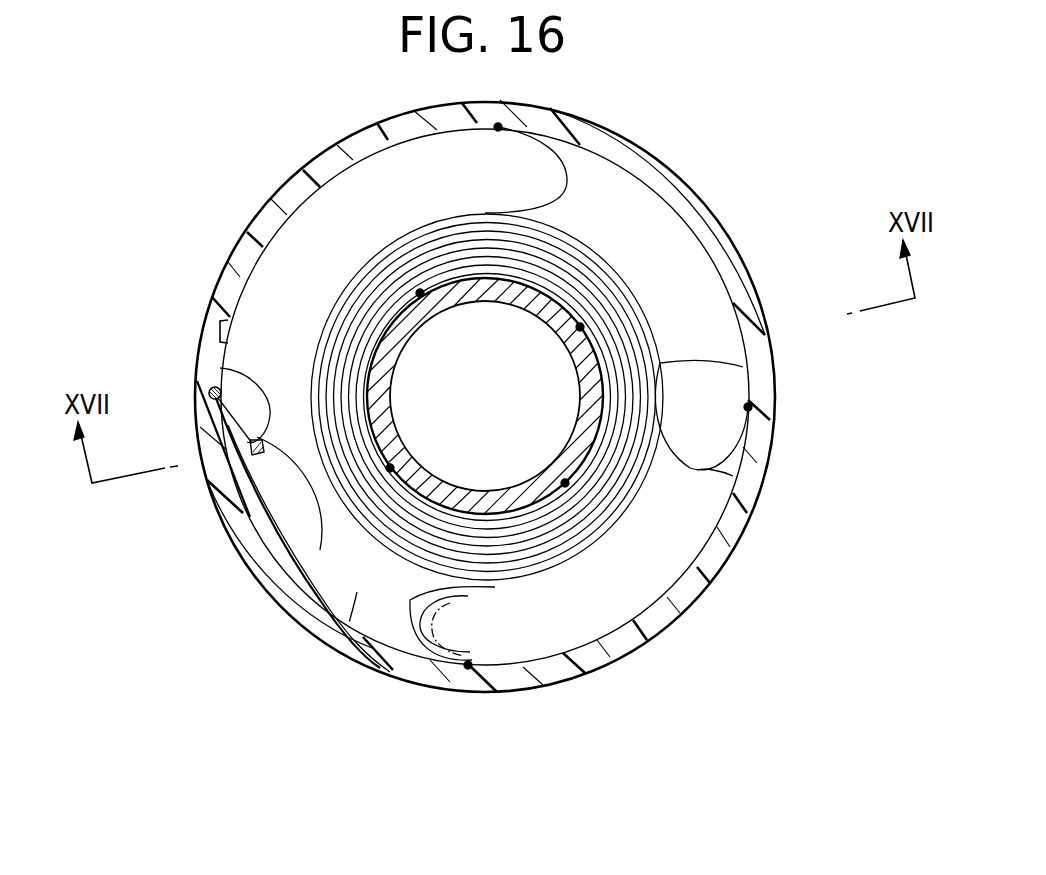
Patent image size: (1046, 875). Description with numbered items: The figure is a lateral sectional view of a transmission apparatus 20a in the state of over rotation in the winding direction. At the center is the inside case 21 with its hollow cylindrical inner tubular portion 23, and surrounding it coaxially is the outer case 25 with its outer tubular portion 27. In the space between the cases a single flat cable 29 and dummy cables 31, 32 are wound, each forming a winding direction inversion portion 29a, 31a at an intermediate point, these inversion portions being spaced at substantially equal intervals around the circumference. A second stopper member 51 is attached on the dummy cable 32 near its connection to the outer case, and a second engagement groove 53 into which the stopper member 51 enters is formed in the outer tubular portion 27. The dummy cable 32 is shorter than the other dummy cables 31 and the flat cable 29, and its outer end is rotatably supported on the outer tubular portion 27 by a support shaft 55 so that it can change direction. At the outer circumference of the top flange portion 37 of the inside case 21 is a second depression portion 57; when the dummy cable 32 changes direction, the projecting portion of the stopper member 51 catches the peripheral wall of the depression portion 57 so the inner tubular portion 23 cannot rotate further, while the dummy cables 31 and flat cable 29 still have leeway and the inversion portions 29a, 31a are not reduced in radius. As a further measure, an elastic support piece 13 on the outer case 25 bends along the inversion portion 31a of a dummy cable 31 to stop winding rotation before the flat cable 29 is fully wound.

The transmission apparatus 20a is at (588, 110).
The support piece 13 is at (466, 668).
The inside case 21 is at (573, 408).
The inner tubular portion 23 is at (578, 358).
The outer case 25 is at (695, 186).
The outer tubular portion 27 is at (732, 268).
The flat cable 29 is at (743, 367).
The winding direction inversion portion 29a is at (733, 476).
The dummy cable 31 is at (447, 210).
The winding direction inversion portion 31a is at (565, 188).
The dummy cable 32 is at (280, 650).
The top flange portion 37 is at (357, 592).
The second stopper member 51 is at (220, 368).
The second engagement groove 53 is at (222, 330).
The support shaft 55 is at (212, 400).
The second depression portion 57 is at (300, 460).